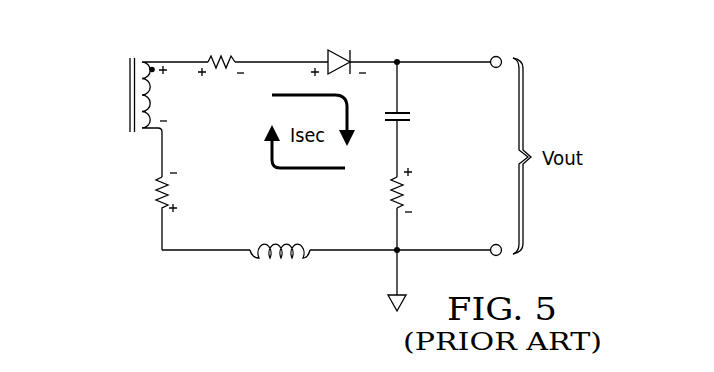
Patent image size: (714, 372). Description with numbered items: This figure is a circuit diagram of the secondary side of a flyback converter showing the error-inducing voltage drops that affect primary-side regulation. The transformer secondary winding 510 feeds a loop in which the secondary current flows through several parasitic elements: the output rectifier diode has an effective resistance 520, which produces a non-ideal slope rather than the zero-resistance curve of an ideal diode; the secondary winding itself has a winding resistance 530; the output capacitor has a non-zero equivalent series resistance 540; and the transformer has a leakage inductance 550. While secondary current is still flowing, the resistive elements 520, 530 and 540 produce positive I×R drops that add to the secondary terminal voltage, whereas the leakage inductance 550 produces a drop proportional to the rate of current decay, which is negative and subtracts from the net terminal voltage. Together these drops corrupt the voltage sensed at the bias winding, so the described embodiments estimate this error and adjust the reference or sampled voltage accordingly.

The transformer secondary winding 510 is at (141, 61).
The effective resistance of output rectifier 520 is at (217, 66).
The winding resistance 530 is at (155, 188).
The equivalent series resistance of output capacitor 540 is at (403, 190).
The leakage inductance 550 is at (257, 262).